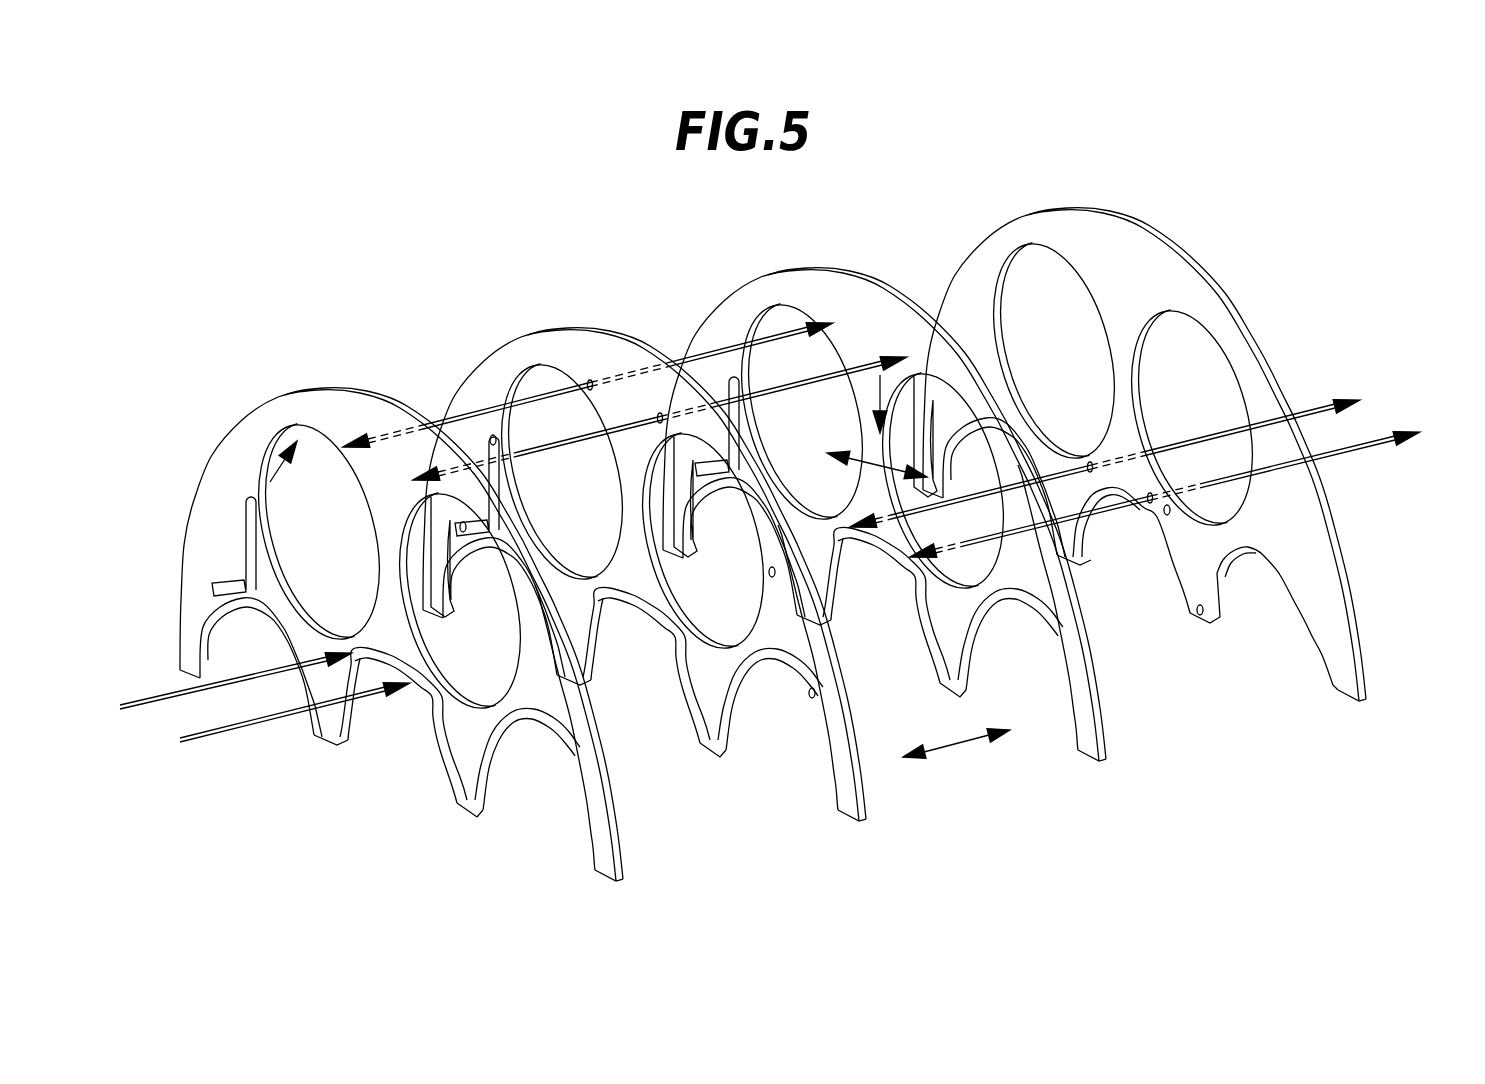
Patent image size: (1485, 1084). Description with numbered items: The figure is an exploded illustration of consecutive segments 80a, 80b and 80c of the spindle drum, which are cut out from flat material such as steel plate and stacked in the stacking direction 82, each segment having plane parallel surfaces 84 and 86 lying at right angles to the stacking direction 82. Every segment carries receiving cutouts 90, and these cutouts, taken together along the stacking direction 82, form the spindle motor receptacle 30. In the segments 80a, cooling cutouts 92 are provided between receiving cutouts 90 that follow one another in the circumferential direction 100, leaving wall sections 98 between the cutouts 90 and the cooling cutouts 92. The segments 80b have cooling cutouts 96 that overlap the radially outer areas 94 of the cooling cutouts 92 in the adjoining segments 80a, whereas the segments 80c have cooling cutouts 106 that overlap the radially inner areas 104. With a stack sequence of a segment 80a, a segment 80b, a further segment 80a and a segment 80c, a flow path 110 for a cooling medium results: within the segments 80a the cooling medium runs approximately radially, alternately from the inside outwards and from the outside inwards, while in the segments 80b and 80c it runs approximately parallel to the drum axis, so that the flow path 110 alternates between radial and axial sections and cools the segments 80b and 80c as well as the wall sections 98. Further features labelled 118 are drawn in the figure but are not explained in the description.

The spindle motor receptacle 30 is at (263, 488).
The segment 80a is at (293, 408).
The segment 80b is at (598, 346).
The segment 80c is at (1240, 367).
The stacking direction 82 is at (957, 748).
The plane parallel surface 84 is at (262, 428).
The plane parallel surface 86 is at (360, 395).
The receiving cutout 90 is at (266, 511).
The cooling cutout 92 is at (244, 578).
The area located radially outwards 94 is at (433, 458).
The cooling cutout 96 is at (670, 368).
The wall section 98 is at (367, 518).
The circumferential direction 100 is at (876, 468).
The area located radially inwards 104 is at (897, 548).
The cooling cutout 106 is at (1107, 494).
The flow path 110 is at (258, 725).
The web 118 is at (387, 494).